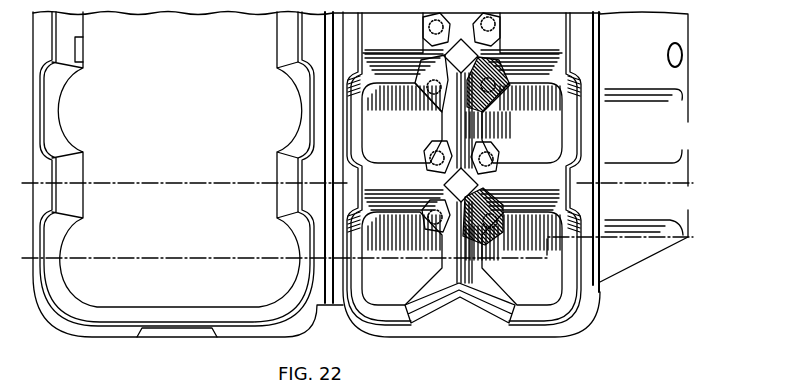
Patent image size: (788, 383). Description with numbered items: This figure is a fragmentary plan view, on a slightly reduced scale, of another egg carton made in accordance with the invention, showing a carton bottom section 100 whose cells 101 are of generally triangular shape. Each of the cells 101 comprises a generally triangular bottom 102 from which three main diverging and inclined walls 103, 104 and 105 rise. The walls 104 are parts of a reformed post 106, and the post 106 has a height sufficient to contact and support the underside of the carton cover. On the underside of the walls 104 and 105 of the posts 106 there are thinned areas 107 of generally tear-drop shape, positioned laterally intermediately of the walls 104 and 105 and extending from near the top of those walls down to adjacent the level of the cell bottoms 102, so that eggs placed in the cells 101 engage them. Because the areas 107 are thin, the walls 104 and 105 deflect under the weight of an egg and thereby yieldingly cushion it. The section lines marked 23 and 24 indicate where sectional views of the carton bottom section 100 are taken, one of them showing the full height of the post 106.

The carton bottom section 100 is at (582, 334).
The cells 101 is at (496, 296).
The generally triangular bottom 102 is at (399, 130).
The inclined wall 103 is at (352, 277).
The inclined wall 104 is at (461, 120).
The inclined wall 105 is at (444, 142).
The reformed post 106 is at (441, 63).
The thinned area 107 is at (495, 23).
The section line 23 is at (693, 208).
The section line 24 is at (693, 152).